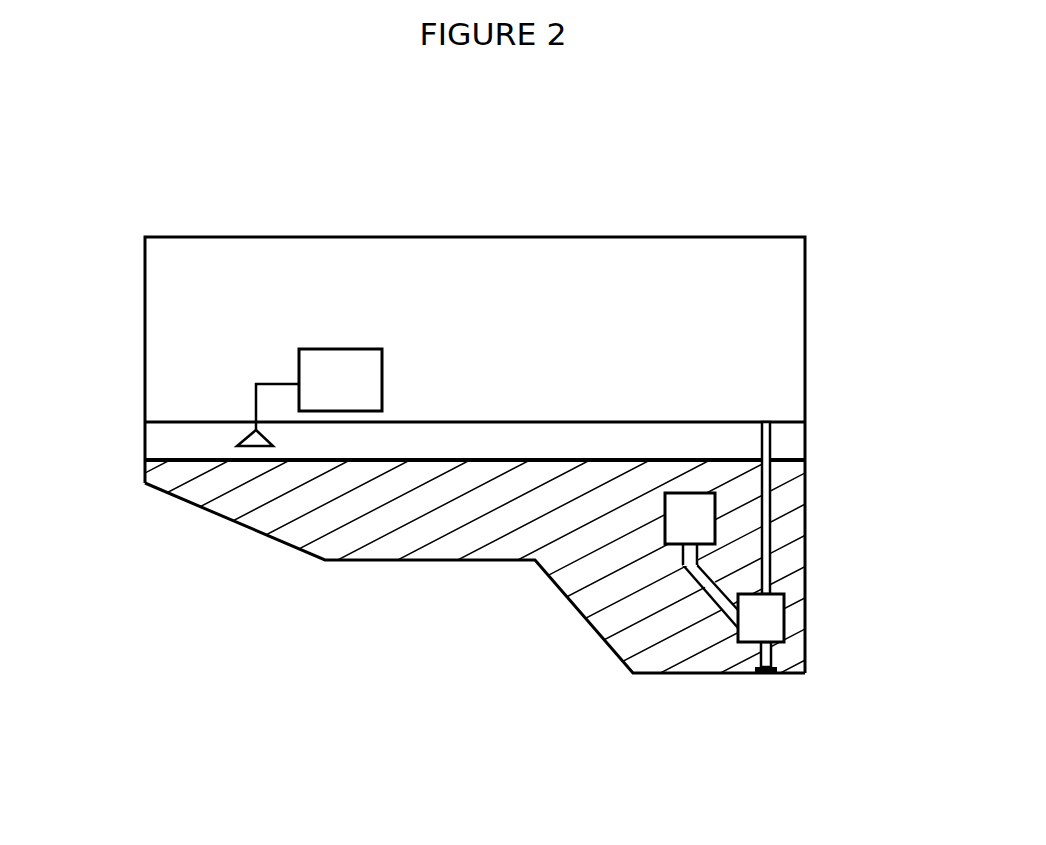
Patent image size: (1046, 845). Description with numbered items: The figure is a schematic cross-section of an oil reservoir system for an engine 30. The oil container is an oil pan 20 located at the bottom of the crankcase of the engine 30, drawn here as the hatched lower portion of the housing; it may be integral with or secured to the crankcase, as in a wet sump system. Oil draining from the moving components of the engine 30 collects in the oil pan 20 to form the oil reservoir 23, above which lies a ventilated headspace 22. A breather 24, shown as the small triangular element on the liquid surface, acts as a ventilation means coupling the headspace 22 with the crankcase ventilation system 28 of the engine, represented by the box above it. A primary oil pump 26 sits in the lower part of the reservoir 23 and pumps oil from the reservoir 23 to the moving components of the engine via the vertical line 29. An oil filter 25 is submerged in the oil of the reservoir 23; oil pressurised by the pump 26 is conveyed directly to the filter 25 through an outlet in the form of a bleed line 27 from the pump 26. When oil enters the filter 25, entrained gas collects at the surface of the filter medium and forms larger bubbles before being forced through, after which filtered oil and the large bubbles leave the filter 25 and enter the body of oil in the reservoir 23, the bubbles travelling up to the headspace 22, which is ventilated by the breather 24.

The oil pan 20 is at (697, 675).
The ventilated headspace 22 is at (700, 438).
The oil reservoir 23 is at (407, 502).
The breather 24 is at (238, 437).
The oil filter 25 is at (688, 517).
The primary oil pump 26 is at (760, 618).
The bleed line 27 is at (690, 583).
The crankcase ventilation system 28 is at (325, 347).
The line 29 is at (775, 512).
The engine 30 is at (666, 235).